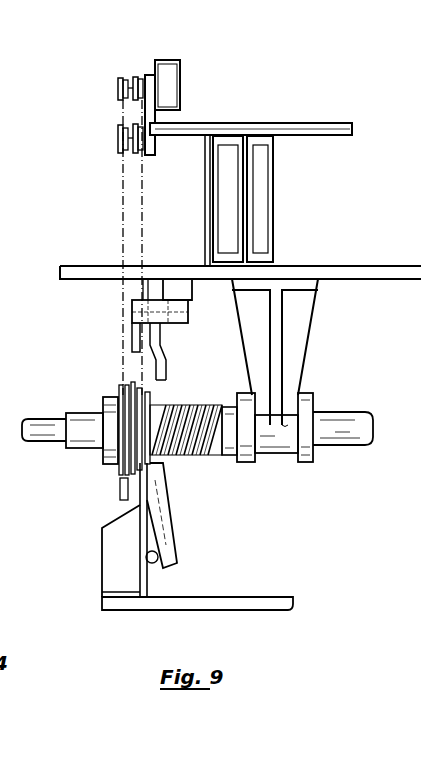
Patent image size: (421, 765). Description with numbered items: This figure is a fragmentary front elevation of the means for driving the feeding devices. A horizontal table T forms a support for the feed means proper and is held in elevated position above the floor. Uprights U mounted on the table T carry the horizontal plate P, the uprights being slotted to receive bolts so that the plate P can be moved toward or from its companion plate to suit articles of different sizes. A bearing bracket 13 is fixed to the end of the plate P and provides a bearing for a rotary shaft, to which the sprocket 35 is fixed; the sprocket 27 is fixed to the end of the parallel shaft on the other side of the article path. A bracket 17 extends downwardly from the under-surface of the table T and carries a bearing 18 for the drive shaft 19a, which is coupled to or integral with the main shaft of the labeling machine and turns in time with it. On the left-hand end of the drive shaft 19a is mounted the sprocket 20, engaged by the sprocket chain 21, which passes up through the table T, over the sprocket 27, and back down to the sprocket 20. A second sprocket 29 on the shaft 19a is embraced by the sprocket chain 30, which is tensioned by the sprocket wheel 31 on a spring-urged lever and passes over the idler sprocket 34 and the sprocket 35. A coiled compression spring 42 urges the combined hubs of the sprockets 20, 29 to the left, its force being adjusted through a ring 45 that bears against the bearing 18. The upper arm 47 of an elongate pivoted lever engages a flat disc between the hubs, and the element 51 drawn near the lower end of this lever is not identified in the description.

The horizontal plate P is at (318, 123).
The horizontal table T is at (370, 266).
The bearing bracket 13 is at (190, 118).
The sprocket 35 is at (142, 80).
The sprocket 27 is at (118, 84).
The idler sprocket 34 is at (118, 129).
The upright U is at (262, 202).
The sprocket chain 21 is at (118, 219).
The sprocket chain 30 is at (146, 216).
The sprocket wheel 31 is at (160, 361).
The bracket 17 is at (292, 329).
The sprocket 20 is at (126, 397).
The second sprocket 29 is at (147, 401).
The coiled compression spring 42 is at (176, 411).
The bearing 18 is at (283, 455).
The ring 45 is at (270, 396).
The drive shaft 19a is at (340, 417).
The upper arm 47 is at (172, 531).
The roller 51 is at (158, 562).